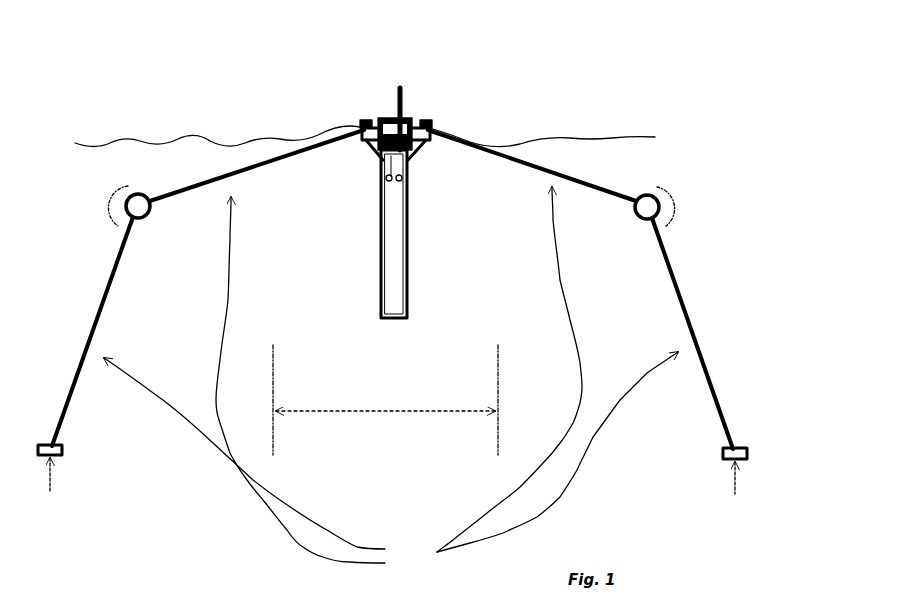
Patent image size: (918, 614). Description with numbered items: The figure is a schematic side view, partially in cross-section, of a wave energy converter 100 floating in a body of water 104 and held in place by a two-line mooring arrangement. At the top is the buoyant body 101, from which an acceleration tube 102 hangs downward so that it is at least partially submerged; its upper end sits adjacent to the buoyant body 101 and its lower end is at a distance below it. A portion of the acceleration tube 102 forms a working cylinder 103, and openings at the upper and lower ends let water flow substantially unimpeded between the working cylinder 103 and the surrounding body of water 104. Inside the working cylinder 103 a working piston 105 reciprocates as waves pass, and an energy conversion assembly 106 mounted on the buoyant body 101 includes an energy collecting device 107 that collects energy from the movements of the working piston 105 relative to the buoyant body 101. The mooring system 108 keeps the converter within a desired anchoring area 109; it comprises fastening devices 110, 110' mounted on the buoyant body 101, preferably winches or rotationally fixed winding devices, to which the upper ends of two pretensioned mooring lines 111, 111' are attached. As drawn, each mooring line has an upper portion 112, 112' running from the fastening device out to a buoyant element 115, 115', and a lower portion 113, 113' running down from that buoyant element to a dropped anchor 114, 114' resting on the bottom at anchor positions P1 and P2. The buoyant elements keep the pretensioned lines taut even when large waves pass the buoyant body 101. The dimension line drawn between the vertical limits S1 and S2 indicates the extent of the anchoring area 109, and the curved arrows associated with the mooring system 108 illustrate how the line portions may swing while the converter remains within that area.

The wave energy converter 100 is at (330, 56).
The buoyant body 101 is at (415, 112).
The acceleration tube 102 is at (416, 238).
The working cylinder 103 is at (404, 180).
The body of water 104 is at (125, 140).
The working piston 105 is at (391, 182).
The energy conversion assembly 106 is at (377, 106).
The energy collecting device 107 is at (401, 118).
The mooring system 108 is at (391, 375).
The anchoring area 109 is at (392, 412).
The fastening device 110 is at (330, 111).
The fastening device 110' is at (461, 111).
The mooring line 111 is at (49, 237).
The mooring line 111' is at (725, 224).
The left upper arm 112 is at (257, 147).
The right upper arm 112' is at (532, 149).
The left lower arm 113 is at (71, 331).
The right lower arm 113' is at (710, 333).
The left foot / anchor 114 is at (81, 442).
The right foot / anchor 114' is at (696, 458).
The left joint 115 is at (160, 230).
The right joint 115' is at (632, 226).
The left anchor position P1 is at (52, 484).
The right anchor position P2 is at (733, 481).
The left span limit S1 is at (271, 364).
The right span limit S2 is at (500, 370).